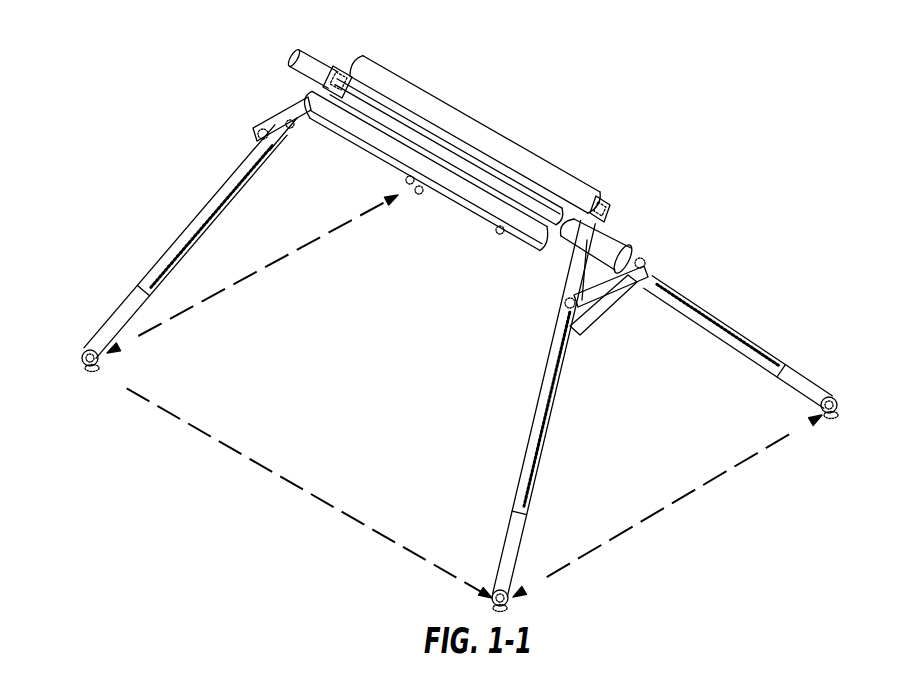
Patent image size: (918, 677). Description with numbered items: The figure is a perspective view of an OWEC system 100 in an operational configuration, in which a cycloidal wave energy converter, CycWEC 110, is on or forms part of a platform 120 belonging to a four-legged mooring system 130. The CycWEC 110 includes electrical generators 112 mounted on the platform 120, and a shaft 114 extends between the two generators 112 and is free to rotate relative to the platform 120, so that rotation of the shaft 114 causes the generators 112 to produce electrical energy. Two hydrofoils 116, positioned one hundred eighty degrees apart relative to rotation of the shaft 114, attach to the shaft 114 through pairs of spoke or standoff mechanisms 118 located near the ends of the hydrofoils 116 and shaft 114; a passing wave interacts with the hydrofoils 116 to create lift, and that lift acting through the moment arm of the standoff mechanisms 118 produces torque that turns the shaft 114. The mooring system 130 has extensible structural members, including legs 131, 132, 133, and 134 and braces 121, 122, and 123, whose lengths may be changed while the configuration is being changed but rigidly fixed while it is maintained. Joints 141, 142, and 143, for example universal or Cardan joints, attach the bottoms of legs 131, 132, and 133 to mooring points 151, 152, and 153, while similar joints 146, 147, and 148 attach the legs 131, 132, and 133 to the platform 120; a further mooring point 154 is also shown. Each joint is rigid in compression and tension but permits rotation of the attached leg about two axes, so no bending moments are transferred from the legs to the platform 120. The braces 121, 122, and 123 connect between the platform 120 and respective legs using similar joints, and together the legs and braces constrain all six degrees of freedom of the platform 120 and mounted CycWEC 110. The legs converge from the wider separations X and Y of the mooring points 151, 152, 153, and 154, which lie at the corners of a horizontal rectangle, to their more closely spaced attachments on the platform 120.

The OWEC system 100 is at (212, 490).
The CycWEC 110 is at (522, 88).
The electrical generator 112 is at (300, 75).
The shaft 114 is at (483, 164).
The hydrofoil 116 is at (432, 108).
The standoff mechanism 118 is at (350, 80).
The platform 120 is at (572, 274).
The brace 121 is at (640, 292).
The brace 122 is at (585, 332).
The brace 123 is at (297, 157).
The mooring system 130 is at (150, 217).
The leg 131 is at (712, 305).
The leg 132 is at (546, 392).
The leg 133 is at (212, 205).
The leg 134 is at (407, 176).
The joint 141 is at (838, 401).
The joint 142 is at (478, 596).
The joint 143 is at (80, 362).
The joint 146 is at (642, 264).
The joint 147 is at (568, 305).
The joint 148 is at (258, 135).
The mooring point 151 is at (842, 413).
The mooring point 152 is at (510, 603).
The mooring point 153 is at (100, 373).
The mooring point 154 is at (420, 190).